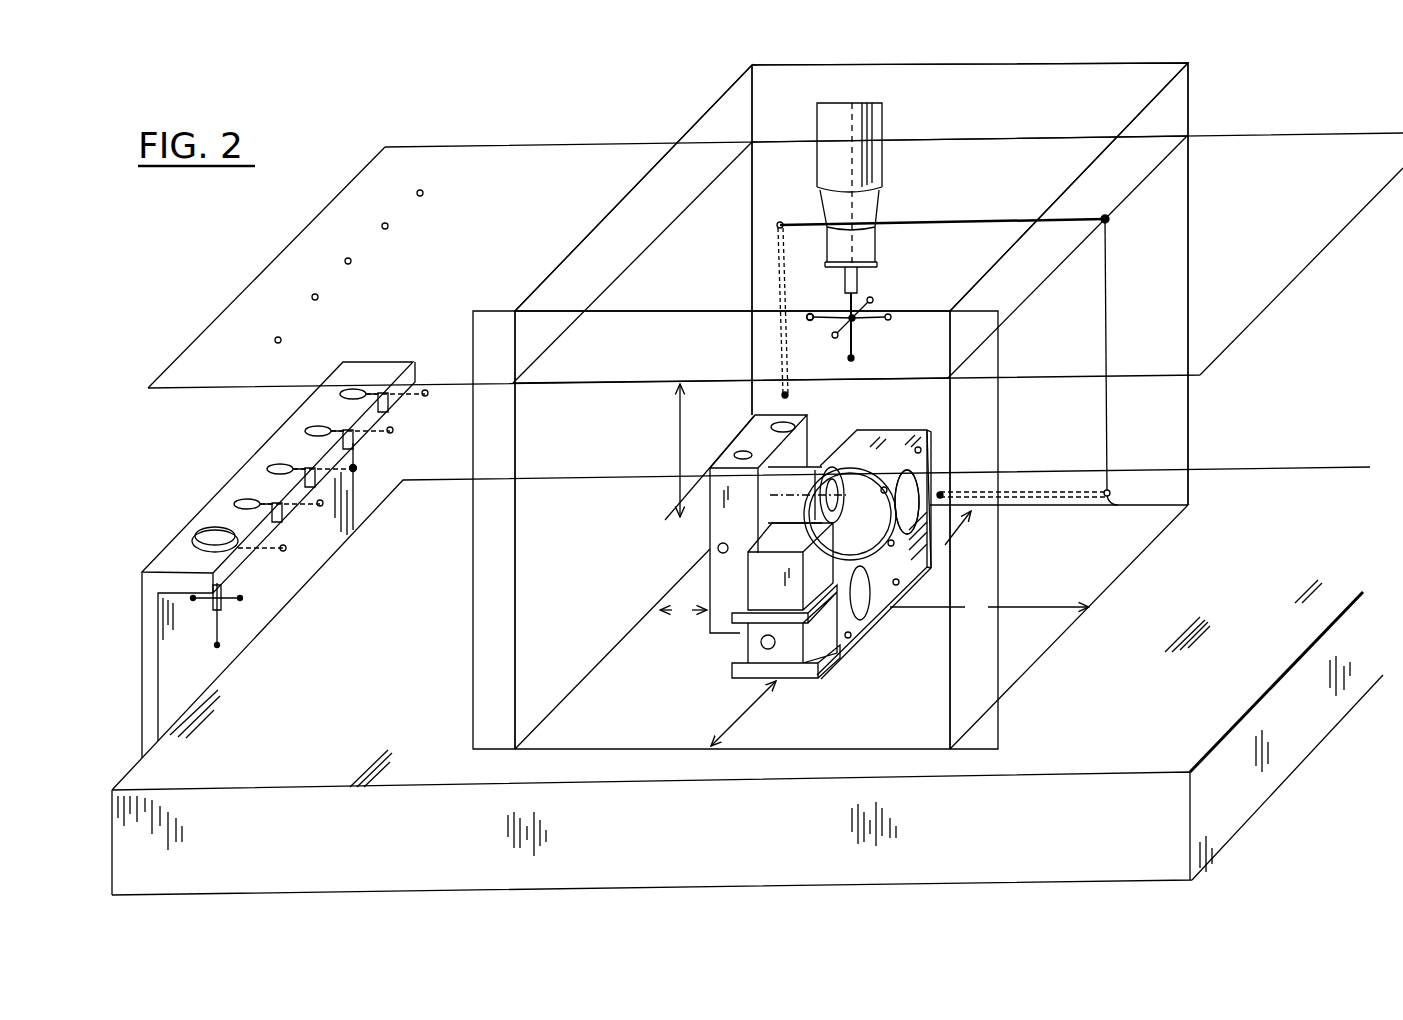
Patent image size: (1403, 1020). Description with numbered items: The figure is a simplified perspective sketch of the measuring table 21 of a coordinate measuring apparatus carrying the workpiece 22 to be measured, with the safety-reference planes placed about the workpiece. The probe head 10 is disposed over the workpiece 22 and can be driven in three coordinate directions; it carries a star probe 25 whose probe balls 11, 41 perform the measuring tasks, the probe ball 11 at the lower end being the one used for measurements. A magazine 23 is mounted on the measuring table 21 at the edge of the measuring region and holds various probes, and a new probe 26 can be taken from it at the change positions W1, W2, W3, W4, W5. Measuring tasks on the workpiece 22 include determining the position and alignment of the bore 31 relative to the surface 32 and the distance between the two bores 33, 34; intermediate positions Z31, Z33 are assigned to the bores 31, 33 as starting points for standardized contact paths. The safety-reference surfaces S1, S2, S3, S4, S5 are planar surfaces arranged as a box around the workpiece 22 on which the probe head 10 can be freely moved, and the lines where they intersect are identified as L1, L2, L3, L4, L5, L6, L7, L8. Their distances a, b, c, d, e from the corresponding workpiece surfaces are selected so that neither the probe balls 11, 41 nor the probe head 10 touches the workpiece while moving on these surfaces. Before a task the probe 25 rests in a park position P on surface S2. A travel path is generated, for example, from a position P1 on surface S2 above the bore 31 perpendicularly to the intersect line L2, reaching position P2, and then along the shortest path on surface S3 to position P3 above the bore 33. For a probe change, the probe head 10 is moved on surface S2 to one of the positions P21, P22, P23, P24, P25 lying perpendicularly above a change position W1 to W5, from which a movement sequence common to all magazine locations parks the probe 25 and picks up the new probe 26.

The probe head 10 is at (883, 122).
The probe ball 11 is at (848, 358).
The measuring table 21 is at (1286, 483).
The workpiece 22 is at (888, 440).
The magazine 23 is at (220, 503).
The star probe 25 is at (860, 322).
The new probe 26 is at (213, 603).
The bore 31 is at (810, 423).
The surface 32 is at (940, 447).
The bore 33 is at (945, 540).
The bore 34 is at (868, 612).
The probe ball 41 is at (811, 314).
The park position P is at (547, 163).
The position P1 is at (780, 222).
The position P2 is at (1108, 219).
The position P3 is at (1119, 510).
The position P21 is at (275, 341).
The position P22 is at (312, 298).
The position P23 is at (345, 262).
The position P24 is at (382, 227).
The position P25 is at (417, 193).
The safety-reference surface S1 is at (714, 135).
The safety-reference surface S2 is at (1055, 155).
The safety-reference surface S3 is at (1178, 447).
The safety-reference surface S4 is at (478, 683).
The safety-reference surface S5 is at (1140, 72).
The intersect line L1 is at (645, 250).
The intersect line L2 is at (1168, 157).
The intersect line L3 is at (638, 381).
The intersect line L4 is at (1010, 135).
The intersect line L5 is at (519, 618).
The intersect line L6 is at (949, 702).
The intersect line L7 is at (1190, 232).
The intersect line L8 is at (760, 114).
The change position W1 is at (286, 550).
The change position W2 is at (323, 505).
The change position W3 is at (355, 468).
The change position W4 is at (392, 433).
The change position W5 is at (425, 396).
The intermediate position Z31 is at (788, 395).
The intermediate position Z33 is at (941, 468).
The distance a is at (989, 606).
The distance b is at (743, 713).
The distance c is at (683, 609).
The distance d is at (676, 450).
The distance e is at (958, 530).